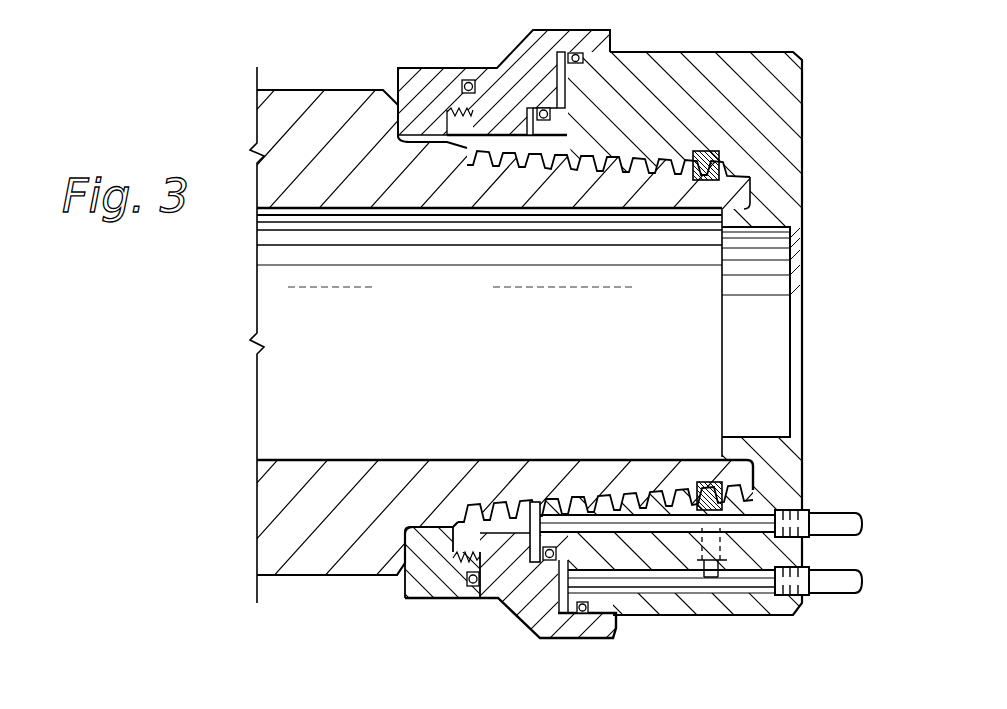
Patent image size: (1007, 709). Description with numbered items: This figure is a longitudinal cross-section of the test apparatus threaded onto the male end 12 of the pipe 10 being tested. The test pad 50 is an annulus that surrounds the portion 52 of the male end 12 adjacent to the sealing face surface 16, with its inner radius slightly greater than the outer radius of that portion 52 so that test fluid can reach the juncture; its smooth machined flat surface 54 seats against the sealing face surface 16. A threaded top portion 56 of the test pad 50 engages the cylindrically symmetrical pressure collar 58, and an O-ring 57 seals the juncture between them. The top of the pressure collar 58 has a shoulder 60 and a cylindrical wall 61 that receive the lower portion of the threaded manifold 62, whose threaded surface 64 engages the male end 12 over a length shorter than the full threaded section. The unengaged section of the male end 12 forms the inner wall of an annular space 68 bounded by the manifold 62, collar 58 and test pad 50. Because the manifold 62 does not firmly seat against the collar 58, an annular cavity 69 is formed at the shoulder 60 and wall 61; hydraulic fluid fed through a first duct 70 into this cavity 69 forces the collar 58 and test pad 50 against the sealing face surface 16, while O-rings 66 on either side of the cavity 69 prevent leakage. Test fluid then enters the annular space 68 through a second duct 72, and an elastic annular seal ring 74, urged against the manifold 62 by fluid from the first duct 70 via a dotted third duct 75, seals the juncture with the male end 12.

The pipe 10 is at (268, 556).
The male end 12 is at (331, 463).
The sealing face surface 16 is at (400, 548).
The test pad 50 is at (415, 610).
The portion of the male end adjacent the sealing face surface 52 is at (444, 524).
The flat surface 54 is at (405, 592).
The threaded top portion 56 is at (470, 562).
The O-ring 57 is at (472, 588).
The pressure collar 58 is at (540, 608).
The shoulder 60 is at (556, 588).
The cylindrical wall 61 is at (613, 630).
The threaded manifold 62 is at (733, 600).
The threaded surface 64 is at (647, 490).
The O-rings 66 is at (548, 560).
The annular space 68 is at (535, 503).
The annular cavity 69 is at (552, 545).
The first duct 70 is at (684, 582).
The second duct 72 is at (590, 515).
The annular seal ring 74 is at (700, 482).
The third duct 75 is at (723, 567).